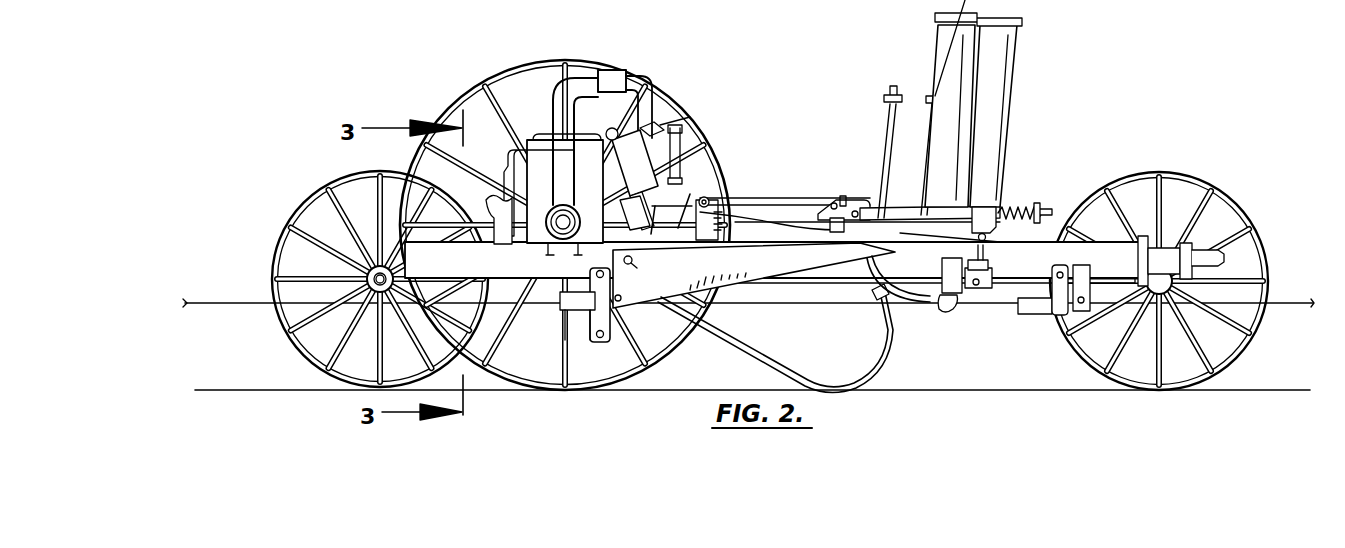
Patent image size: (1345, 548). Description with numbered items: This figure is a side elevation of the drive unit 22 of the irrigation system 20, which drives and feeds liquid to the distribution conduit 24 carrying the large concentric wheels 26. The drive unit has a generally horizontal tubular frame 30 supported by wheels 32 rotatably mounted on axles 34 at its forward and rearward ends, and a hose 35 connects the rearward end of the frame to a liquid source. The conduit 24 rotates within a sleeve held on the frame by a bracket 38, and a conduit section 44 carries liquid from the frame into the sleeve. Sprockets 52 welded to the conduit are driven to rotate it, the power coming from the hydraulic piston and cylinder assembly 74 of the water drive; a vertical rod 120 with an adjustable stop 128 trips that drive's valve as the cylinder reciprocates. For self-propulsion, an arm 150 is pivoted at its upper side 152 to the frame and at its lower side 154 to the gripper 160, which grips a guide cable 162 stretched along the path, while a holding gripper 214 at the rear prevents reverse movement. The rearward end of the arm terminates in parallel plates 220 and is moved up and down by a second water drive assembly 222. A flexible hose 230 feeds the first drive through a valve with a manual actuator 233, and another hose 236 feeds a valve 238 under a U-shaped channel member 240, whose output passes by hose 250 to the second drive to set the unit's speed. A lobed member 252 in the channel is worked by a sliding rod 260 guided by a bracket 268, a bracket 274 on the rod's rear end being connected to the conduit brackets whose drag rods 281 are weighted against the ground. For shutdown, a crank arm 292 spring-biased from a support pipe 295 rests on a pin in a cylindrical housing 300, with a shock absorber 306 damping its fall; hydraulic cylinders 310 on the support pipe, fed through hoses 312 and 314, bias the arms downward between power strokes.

The irrigation system 20 is at (290, 177).
The drive unit 22 is at (793, 161).
The distribution conduit 24 is at (548, 238).
The wheels 26 is at (511, 62).
The tubular frame 30 is at (1103, 238).
The wheels 32 is at (274, 248).
The axles 34 is at (374, 286).
The hose 35 is at (1218, 256).
The bracket 38 is at (560, 260).
The conduit section 44 is at (610, 70).
The sprockets 52 is at (504, 200).
The hydraulic piston and cylinder assembly 74 is at (932, 56).
The rod 120 is at (886, 110).
The adjustable stop 128 is at (884, 96).
The arm 150 is at (776, 290).
The pivot 152 is at (646, 266).
The pivot 154 is at (624, 299).
The gripper 160 is at (594, 322).
The guide cable 162 is at (199, 306).
The holding gripper 214 is at (1042, 323).
The parallel plates 220 is at (986, 236).
The water drive assembly 222 is at (1020, 174).
The flexible hose 230 is at (666, 172).
The actuator 233 is at (698, 144).
The hose 236 is at (810, 200).
The valve 238 is at (834, 240).
The channel member 240 is at (898, 210).
The hose 250 is at (898, 305).
The member 252 is at (846, 188).
The rod 260 is at (758, 200).
The bracket 268 is at (720, 240).
The bracket 274 is at (1044, 204).
The drag rods 281 is at (812, 328).
The crank arm 292 is at (672, 234).
The support pipe 295 is at (624, 98).
The cylindrical housing 300 is at (666, 200).
The shock absorber 306 is at (654, 132).
The hydraulic cylinders 310 is at (680, 134).
The hose 312 is at (522, 170).
The hose 314 is at (534, 138).